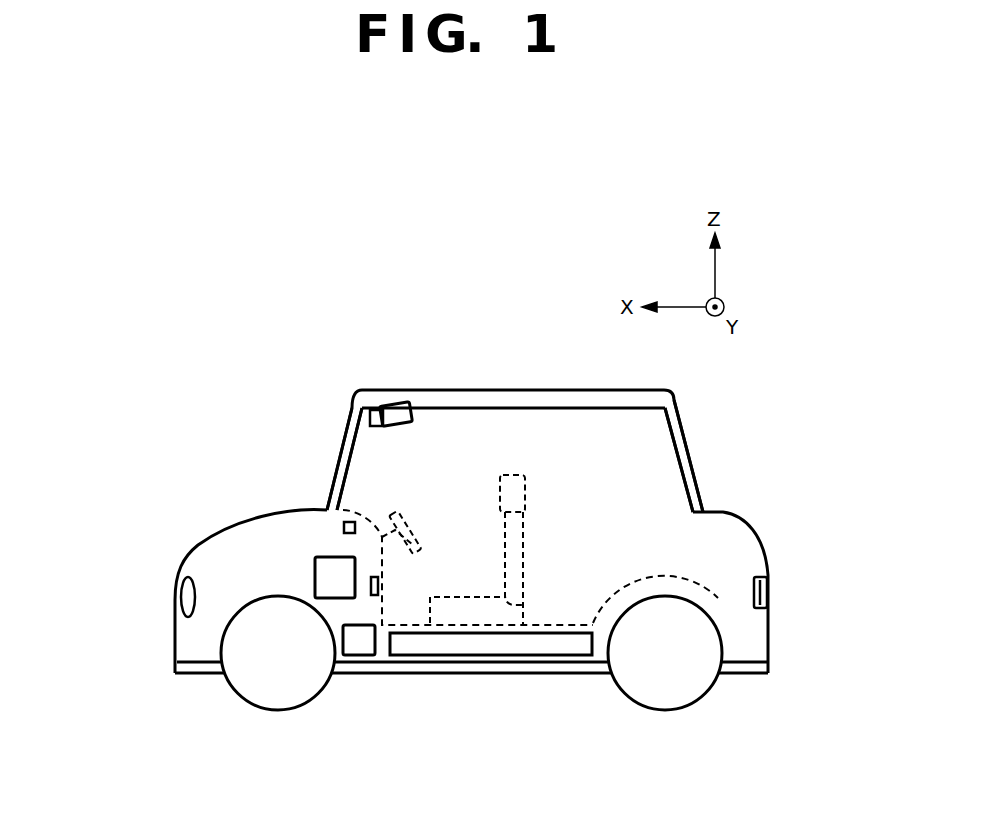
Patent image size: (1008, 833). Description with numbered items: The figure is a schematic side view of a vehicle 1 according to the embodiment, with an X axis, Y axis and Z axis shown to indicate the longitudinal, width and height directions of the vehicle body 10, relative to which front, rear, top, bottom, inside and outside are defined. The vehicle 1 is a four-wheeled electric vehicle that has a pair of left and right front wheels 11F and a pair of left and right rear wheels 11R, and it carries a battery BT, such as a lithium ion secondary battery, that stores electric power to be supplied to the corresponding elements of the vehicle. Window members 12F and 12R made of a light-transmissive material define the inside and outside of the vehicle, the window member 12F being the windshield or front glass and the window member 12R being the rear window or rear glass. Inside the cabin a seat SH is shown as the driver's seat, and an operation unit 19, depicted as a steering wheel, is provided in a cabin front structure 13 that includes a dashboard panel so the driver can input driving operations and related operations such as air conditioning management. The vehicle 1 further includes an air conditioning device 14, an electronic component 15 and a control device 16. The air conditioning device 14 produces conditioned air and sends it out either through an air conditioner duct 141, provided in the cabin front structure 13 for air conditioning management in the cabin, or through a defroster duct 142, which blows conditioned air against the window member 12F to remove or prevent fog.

The vehicle 1 is at (235, 302).
The vehicle body 10 is at (768, 633).
The front wheels 11F is at (275, 712).
The rear wheels 11R is at (668, 712).
The window member 12F is at (343, 440).
The window member 12R is at (688, 442).
The cabin front structure 13 is at (363, 517).
The air conditioning device 14 is at (315, 581).
The air conditioner duct 141 is at (370, 596).
The defroster duct 142 is at (344, 527).
The electronic component 15 is at (392, 405).
The control device 16 is at (353, 656).
The operation unit 19 is at (408, 533).
The seat SH is at (523, 530).
The battery BT is at (500, 656).